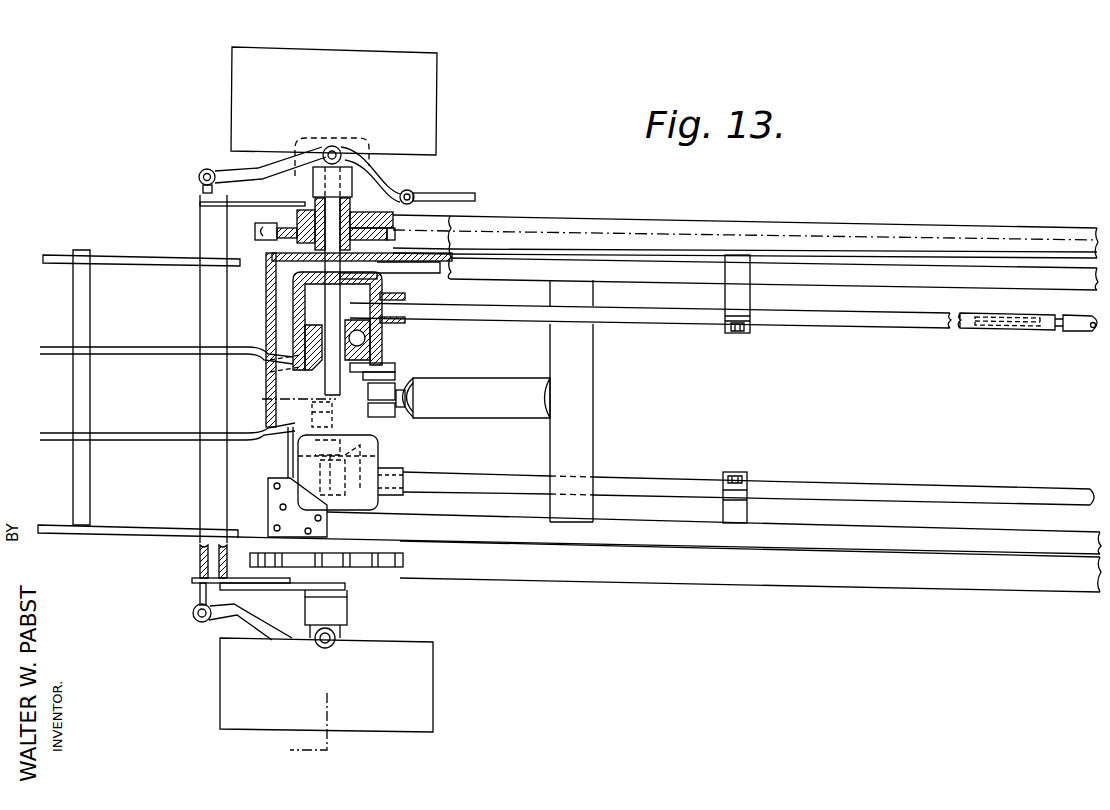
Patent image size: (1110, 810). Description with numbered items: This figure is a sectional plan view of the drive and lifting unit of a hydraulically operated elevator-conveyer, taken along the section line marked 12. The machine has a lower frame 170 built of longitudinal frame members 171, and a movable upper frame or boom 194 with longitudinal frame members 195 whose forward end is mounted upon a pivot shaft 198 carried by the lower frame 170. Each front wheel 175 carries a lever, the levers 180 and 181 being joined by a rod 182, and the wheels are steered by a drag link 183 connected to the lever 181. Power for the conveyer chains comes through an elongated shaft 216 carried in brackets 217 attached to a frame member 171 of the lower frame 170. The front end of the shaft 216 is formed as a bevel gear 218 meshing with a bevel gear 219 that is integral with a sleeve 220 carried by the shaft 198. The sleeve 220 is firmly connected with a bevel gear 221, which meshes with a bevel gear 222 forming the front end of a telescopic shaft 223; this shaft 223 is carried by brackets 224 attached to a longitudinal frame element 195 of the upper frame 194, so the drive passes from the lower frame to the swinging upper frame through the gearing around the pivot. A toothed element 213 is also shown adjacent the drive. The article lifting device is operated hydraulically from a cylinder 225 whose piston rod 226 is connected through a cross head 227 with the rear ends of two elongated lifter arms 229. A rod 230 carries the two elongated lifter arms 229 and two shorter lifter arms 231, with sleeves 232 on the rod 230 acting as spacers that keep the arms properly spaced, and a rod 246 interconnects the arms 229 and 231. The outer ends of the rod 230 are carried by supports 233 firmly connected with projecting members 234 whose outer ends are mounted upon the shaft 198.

The section line 12 is at (256, 399).
The lower frame 170 is at (1050, 540).
The longitudinal frame member 171 is at (978, 545).
The front wheel 175 is at (246, 102).
The lever 180 is at (228, 614).
The lever 181 is at (228, 167).
The rod 182 is at (198, 593).
The drag link 183 is at (478, 196).
The upper frame 194 is at (947, 232).
The longitudinal frame member 195 is at (860, 237).
The pivot shaft 198 is at (332, 362).
The rack 213 is at (279, 226).
The elongated shaft 216 is at (892, 487).
The bracket 217 is at (740, 506).
The bevel gear 218 is at (375, 462).
The bevel gear 219 is at (282, 476).
The sleeve 220 is at (383, 368).
The bevel gear 221 is at (300, 338).
The bevel gear 222 is at (378, 338).
The telescopic shaft 223 is at (504, 313).
The bracket 224 is at (736, 300).
The cylinder 225 is at (505, 416).
The piston rod 226 is at (418, 390).
The cross head 227 is at (401, 410).
The elongated lifter arm 229 is at (162, 352).
The rod 230 is at (199, 558).
The shorter lifter arm 231 is at (157, 256).
The sleeve 232 is at (212, 291).
The support 233 is at (195, 582).
The projecting member 234 is at (287, 591).
The rod 246 is at (80, 379).